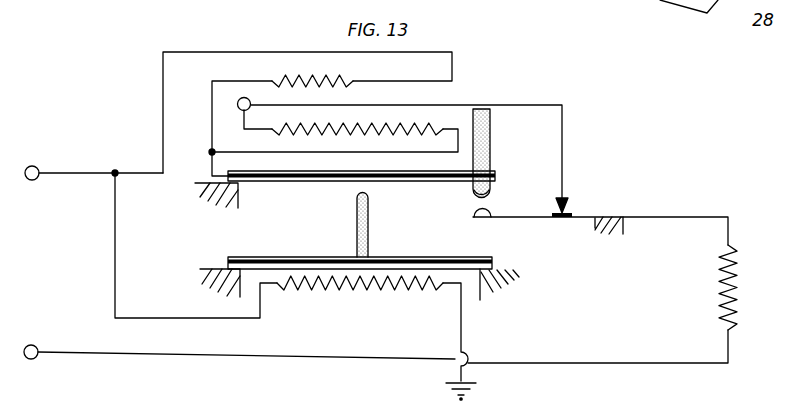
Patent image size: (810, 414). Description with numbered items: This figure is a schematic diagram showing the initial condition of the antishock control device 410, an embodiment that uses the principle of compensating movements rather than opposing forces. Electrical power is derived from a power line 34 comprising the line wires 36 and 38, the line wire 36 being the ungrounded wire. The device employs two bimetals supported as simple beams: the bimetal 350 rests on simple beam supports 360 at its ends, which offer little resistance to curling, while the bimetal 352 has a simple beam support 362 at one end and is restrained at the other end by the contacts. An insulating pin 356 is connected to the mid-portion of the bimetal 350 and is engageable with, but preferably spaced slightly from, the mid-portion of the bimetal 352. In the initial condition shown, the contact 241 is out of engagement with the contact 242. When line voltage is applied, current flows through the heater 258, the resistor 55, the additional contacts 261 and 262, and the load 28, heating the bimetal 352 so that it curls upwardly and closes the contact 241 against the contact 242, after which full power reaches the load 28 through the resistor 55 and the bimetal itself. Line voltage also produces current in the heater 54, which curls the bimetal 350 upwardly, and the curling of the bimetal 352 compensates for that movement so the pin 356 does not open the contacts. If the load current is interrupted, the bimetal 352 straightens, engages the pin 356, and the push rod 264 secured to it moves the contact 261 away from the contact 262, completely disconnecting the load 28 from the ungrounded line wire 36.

The antishock control device 410 is at (108, 77).
The power line 34 is at (38, 219).
The line wire 36 is at (78, 173).
The line wire 38 is at (78, 352).
The resistor 55 is at (300, 74).
The heater 258 is at (355, 128).
The push rod 264 is at (489, 116).
The contact 241 is at (492, 197).
The contact 242 is at (492, 214).
The contact 261 is at (567, 200).
The contact 262 is at (574, 215).
The bimetal 352 is at (325, 188).
The simple beam support 362 is at (204, 180).
The insulating pin 356 is at (369, 215).
The bimetal 350 is at (318, 257).
The simple beam supports 360 is at (202, 270).
The heater 54 is at (347, 292).
The load 28 is at (739, 276).